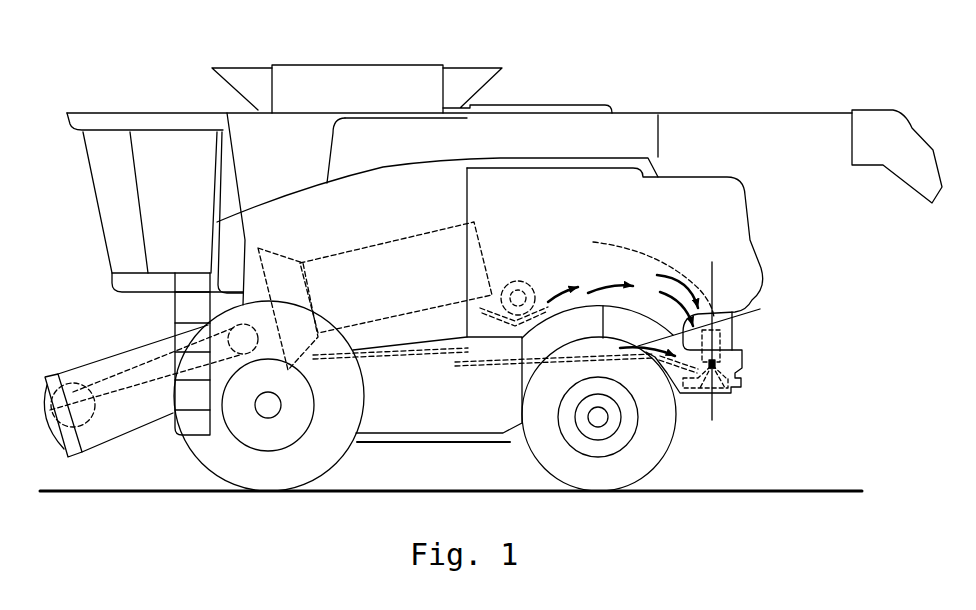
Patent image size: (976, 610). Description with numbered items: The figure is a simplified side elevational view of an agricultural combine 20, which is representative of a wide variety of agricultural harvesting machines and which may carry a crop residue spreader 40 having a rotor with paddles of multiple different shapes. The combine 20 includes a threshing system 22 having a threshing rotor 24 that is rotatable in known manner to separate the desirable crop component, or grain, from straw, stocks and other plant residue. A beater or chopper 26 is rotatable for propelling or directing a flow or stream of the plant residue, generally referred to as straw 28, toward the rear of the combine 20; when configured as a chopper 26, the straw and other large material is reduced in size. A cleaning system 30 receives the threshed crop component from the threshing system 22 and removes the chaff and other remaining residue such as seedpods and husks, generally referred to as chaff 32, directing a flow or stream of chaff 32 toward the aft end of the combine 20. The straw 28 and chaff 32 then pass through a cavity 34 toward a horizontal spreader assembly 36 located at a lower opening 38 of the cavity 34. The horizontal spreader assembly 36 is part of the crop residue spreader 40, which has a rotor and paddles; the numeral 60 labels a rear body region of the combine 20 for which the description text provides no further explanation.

The agricultural combine 20 is at (722, 80).
The threshing system 22 is at (322, 244).
The threshing rotor 24 is at (368, 250).
The beater or chopper 26 is at (513, 282).
The straw 28 is at (557, 297).
The cleaning system 30 is at (507, 373).
The chaff 32 is at (603, 320).
The cavity 34 is at (642, 275).
The horizontal spreader assembly 36 is at (760, 384).
The lower opening 38 is at (742, 313).
The crop residue spreader 40 is at (767, 343).
The rear body panel / tailboard 60 is at (777, 266).